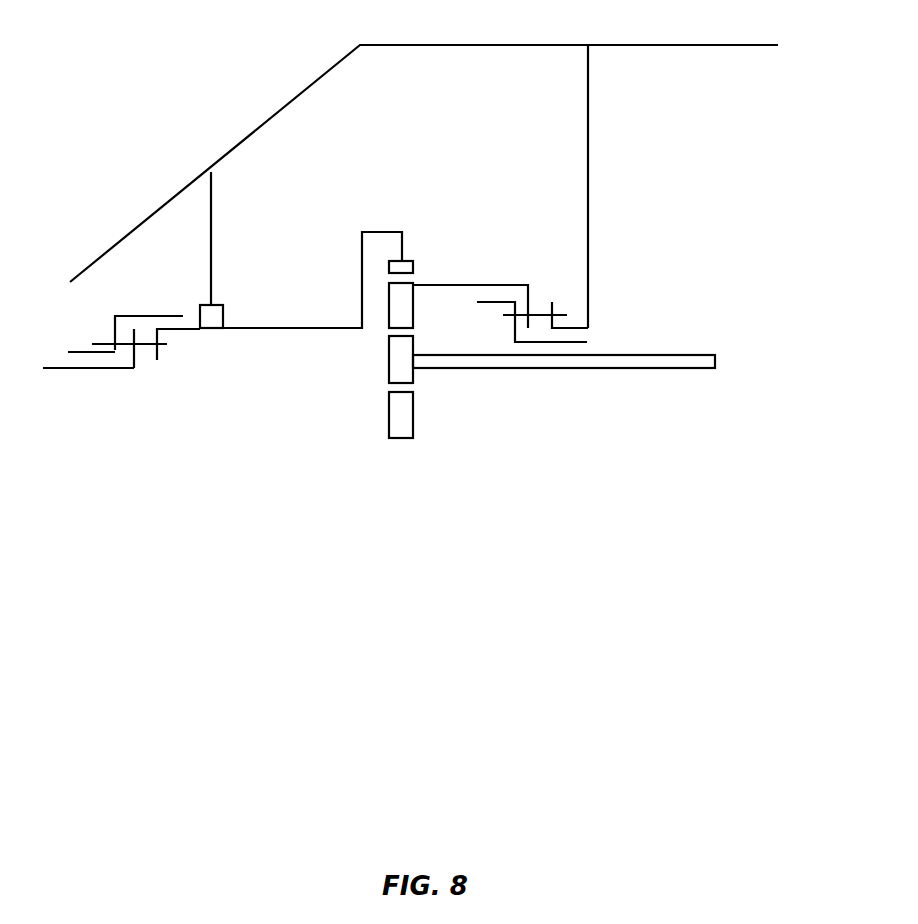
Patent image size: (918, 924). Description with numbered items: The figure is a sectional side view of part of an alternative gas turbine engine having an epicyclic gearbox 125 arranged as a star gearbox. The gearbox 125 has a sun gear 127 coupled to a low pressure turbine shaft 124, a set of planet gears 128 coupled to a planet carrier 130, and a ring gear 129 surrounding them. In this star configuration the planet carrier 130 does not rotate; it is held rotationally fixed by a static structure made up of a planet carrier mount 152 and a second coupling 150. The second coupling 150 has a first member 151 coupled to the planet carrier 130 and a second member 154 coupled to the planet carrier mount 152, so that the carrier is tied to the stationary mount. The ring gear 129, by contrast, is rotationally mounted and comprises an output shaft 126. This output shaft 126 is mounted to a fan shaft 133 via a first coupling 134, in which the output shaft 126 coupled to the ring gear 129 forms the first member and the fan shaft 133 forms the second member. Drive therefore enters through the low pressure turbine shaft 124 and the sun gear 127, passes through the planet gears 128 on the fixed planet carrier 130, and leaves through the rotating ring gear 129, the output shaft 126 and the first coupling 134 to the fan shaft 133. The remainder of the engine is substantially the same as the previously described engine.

The low pressure turbine shaft 124 is at (618, 355).
The epicyclic gearbox 125 is at (452, 435).
The output shaft 126 is at (250, 328).
The sun gear 127 is at (400, 386).
The planet gears 128 is at (389, 307).
The ring gear 129 is at (413, 266).
The planet carrier 130 is at (473, 281).
The fan shaft 133 is at (43, 368).
The first coupling 134 is at (134, 383).
The second coupling 150 is at (562, 277).
The first member 151 is at (530, 290).
The planet carrier mount 152 is at (585, 142).
The second member 154 is at (572, 330).